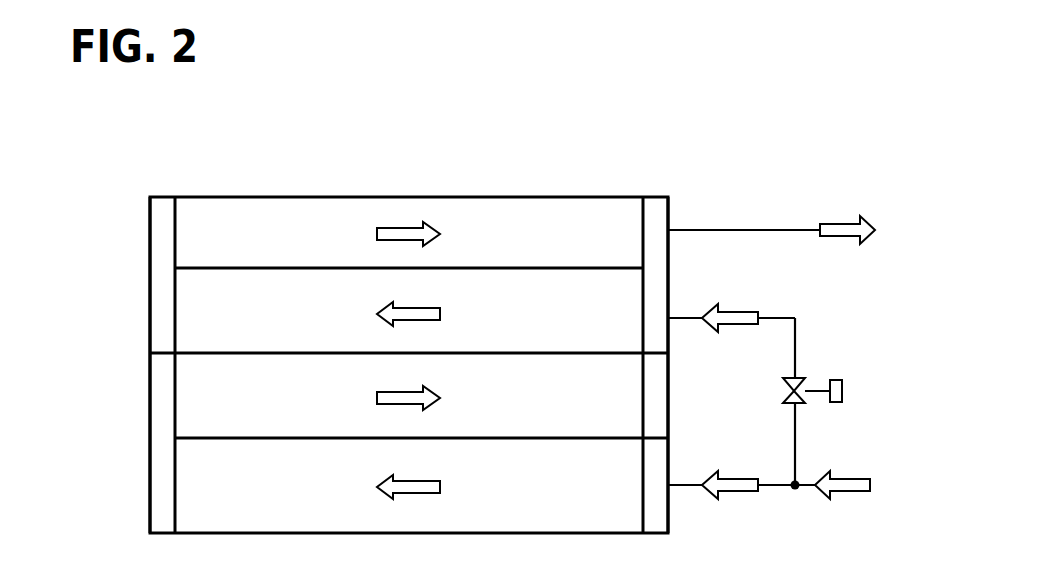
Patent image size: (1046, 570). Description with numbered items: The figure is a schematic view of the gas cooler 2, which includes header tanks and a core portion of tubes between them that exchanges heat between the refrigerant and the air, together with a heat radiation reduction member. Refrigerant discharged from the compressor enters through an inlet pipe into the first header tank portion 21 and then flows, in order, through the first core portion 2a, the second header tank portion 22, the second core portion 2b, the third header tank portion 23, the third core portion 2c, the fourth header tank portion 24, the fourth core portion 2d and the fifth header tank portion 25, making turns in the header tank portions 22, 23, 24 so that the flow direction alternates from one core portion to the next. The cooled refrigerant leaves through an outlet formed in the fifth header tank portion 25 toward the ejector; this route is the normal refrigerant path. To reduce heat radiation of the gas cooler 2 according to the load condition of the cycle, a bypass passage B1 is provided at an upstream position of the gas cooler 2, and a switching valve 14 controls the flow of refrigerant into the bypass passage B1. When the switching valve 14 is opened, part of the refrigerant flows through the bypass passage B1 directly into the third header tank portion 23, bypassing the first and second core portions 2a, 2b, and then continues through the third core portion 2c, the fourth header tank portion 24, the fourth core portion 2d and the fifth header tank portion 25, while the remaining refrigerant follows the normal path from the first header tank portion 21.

The gas cooler 2 is at (565, 194).
The first core portion 2a is at (580, 508).
The second core portion 2b is at (580, 419).
The third core portion 2c is at (580, 334).
The fourth core portion 2d is at (580, 253).
The first header tank portion 21 is at (663, 513).
The second header tank portion 22 is at (162, 453).
The third header tank portion 23 is at (663, 365).
The fourth header tank portion 24 is at (162, 268).
The fifth header tank portion 25 is at (660, 215).
The bypass passage B1 is at (795, 343).
The switching valve 14 is at (842, 391).